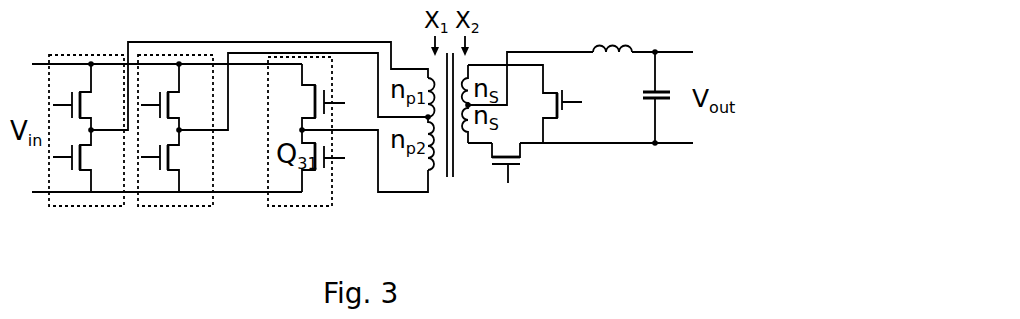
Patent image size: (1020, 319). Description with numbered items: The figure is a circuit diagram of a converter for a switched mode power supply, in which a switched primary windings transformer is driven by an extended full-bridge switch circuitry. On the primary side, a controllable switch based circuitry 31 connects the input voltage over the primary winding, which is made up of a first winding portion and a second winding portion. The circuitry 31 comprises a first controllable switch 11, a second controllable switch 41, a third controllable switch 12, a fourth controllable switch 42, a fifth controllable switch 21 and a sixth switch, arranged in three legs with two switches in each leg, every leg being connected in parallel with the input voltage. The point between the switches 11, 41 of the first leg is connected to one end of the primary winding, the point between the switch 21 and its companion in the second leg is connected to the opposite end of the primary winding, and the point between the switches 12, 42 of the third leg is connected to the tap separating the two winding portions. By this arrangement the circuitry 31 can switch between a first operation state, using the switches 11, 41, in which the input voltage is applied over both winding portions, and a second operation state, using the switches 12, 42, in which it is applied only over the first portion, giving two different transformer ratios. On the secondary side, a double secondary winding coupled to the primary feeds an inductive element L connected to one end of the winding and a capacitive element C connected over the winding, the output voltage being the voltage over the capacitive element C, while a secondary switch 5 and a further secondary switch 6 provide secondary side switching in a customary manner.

The controllable switch based circuitry 31 is at (113, 226).
The controllable switch Q11 11 is at (88, 95).
The controllable switch Q41 41 is at (88, 159).
The controllable switch Q12 12 is at (176, 95).
The controllable switch Q42 42 is at (176, 159).
The controllable switch Q21 21 is at (310, 97).
The switch Q5 5 is at (516, 170).
The switch Q6 6 is at (531, 104).
The inductive element L is at (612, 34).
The capacitive element C is at (659, 97).